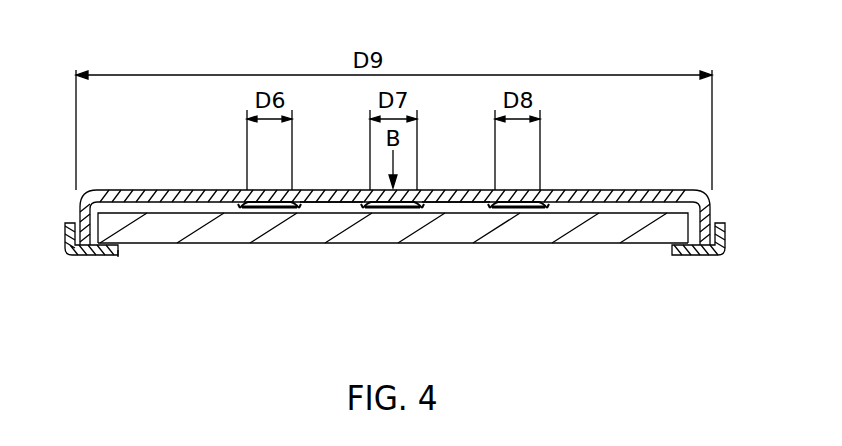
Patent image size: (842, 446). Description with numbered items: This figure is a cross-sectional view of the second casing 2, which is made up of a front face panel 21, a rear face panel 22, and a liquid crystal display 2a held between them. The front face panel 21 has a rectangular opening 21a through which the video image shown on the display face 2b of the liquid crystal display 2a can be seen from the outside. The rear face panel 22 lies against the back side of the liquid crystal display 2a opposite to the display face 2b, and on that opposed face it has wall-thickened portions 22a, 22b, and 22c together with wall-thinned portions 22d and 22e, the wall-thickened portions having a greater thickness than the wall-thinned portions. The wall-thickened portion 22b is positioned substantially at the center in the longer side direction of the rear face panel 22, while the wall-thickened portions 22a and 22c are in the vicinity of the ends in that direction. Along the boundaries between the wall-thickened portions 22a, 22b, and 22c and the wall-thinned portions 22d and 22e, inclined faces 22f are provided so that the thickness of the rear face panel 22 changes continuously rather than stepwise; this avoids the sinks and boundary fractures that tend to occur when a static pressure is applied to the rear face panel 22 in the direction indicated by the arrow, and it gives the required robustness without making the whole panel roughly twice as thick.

The second casing 2 is at (434, 215).
The liquid crystal display 2a is at (600, 228).
The display face 2b is at (652, 244).
The front face panel 21 is at (722, 238).
The opening 21a is at (118, 258).
The rear face panel 22 is at (703, 209).
The wall-thickened portion 22a is at (272, 190).
The wall-thickened portion 22b is at (407, 190).
The wall-thickened portion 22c is at (522, 190).
The wall-thinned portion 22d is at (340, 190).
The wall-thinned portion 22e is at (470, 190).
The inclined faces 22f is at (240, 208).